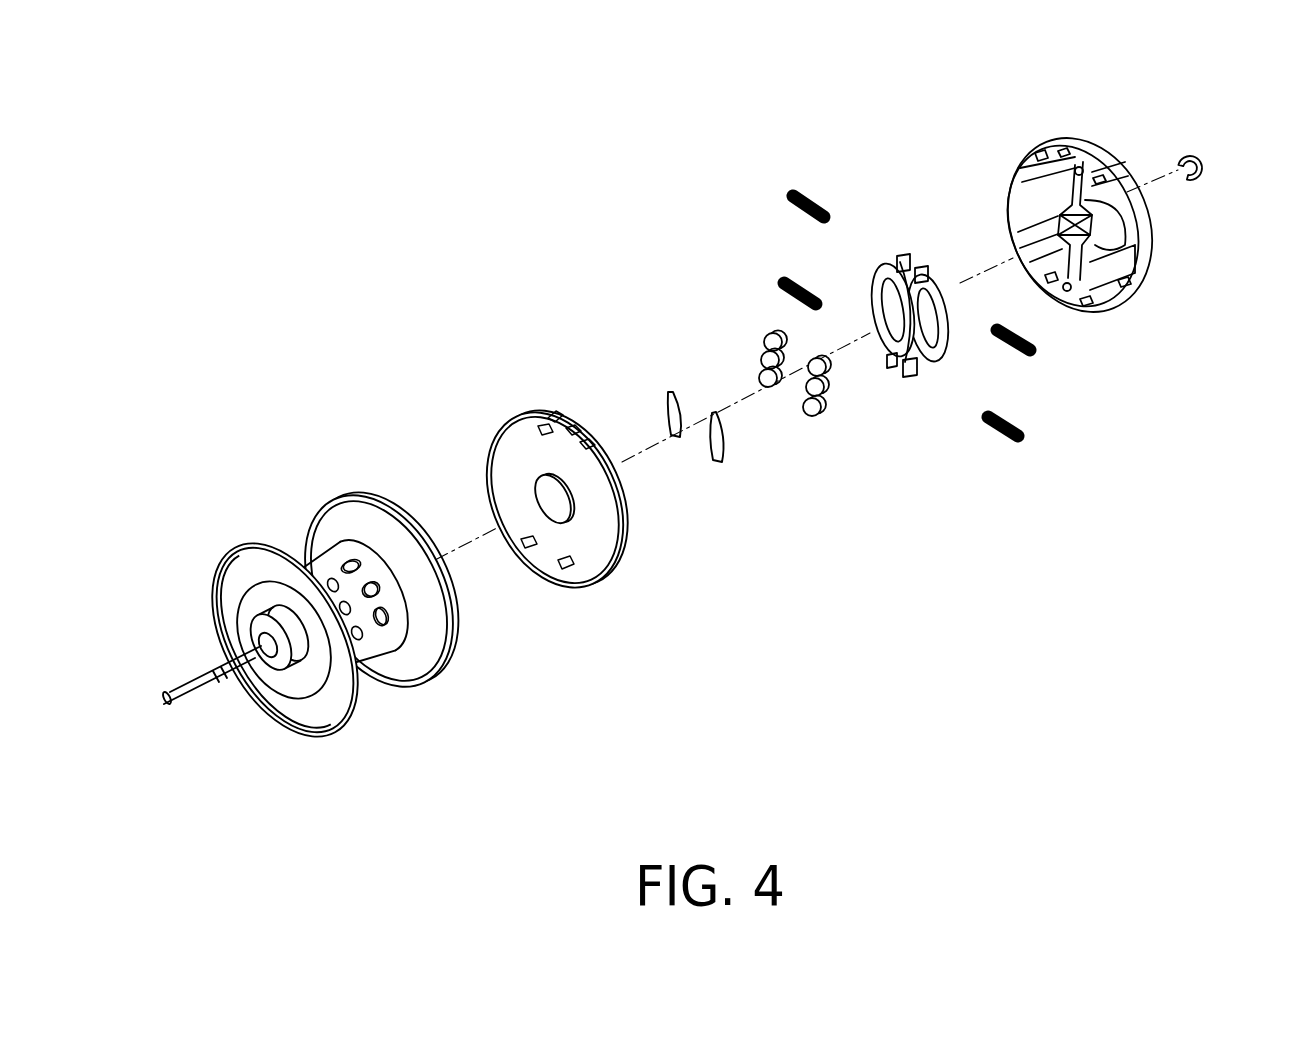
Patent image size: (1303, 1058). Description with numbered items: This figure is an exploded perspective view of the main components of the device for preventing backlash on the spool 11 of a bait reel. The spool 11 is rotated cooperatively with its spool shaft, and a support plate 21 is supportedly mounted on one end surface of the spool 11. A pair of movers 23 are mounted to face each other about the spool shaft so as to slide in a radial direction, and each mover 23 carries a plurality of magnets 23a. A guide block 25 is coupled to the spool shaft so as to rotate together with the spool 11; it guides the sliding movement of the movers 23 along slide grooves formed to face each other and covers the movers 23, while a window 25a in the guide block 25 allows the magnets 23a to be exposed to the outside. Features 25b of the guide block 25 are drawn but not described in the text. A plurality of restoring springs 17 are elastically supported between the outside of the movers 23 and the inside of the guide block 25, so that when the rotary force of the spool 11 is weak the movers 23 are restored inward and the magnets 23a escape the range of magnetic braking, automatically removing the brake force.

The spool 11 is at (422, 688).
The restoring springs 17 is at (1002, 437).
The support plate 21 is at (593, 588).
The movers 23 is at (904, 378).
The magnets 23a is at (816, 415).
The guide block 25 is at (1067, 220).
The window 25a is at (1048, 192).
The engaging recess 25b is at (1055, 170).